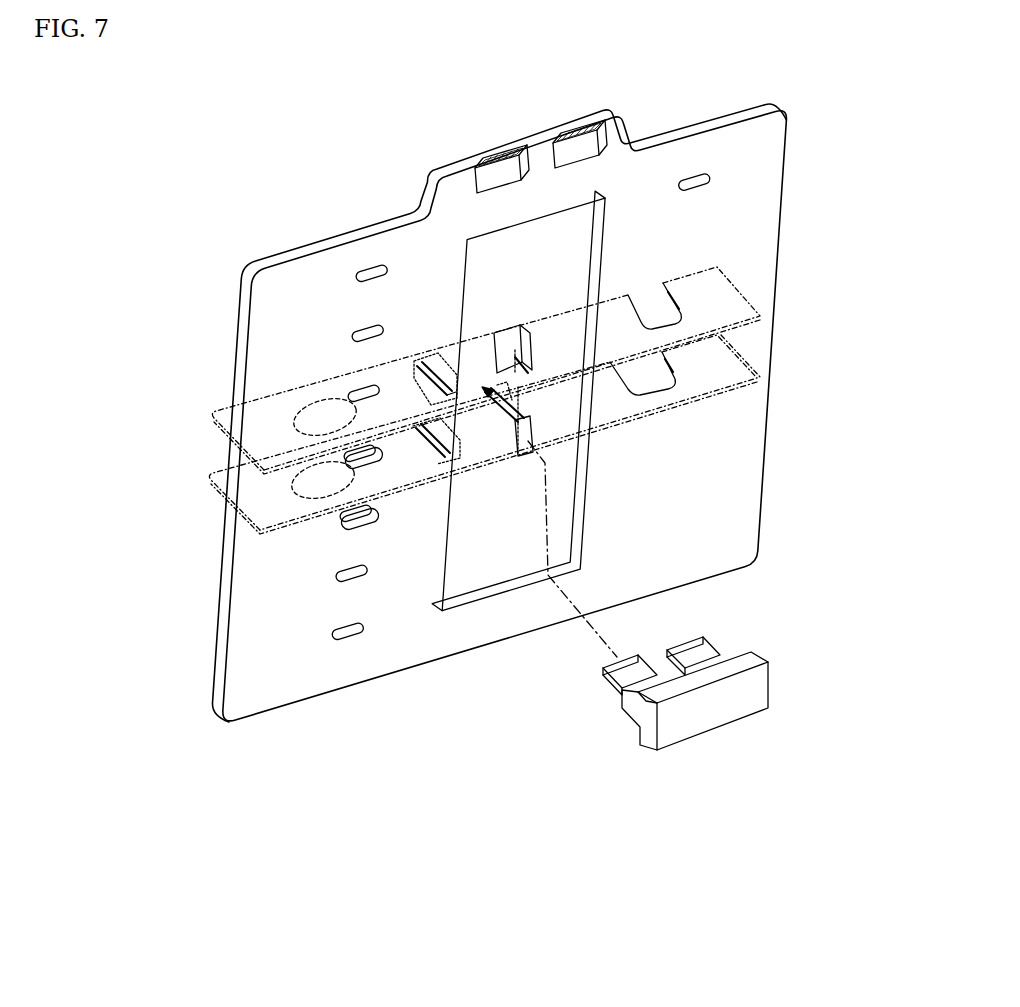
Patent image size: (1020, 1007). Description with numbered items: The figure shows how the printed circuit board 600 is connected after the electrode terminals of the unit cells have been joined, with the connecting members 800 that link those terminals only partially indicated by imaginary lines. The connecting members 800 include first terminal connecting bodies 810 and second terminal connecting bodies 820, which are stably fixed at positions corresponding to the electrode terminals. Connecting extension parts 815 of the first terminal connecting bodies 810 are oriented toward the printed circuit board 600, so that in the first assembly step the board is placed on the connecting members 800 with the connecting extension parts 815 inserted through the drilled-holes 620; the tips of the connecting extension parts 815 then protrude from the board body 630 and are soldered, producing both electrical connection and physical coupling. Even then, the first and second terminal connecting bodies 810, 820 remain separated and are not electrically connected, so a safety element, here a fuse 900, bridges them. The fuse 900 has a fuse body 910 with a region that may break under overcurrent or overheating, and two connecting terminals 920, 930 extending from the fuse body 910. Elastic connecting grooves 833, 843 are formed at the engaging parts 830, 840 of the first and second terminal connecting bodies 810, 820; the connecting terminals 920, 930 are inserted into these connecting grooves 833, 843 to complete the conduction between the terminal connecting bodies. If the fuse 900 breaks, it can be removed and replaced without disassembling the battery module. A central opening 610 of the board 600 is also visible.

The printed circuit board 600 is at (182, 599).
The opening of mounting plate 610 is at (477, 243).
The drilled-holes 620 is at (366, 265).
The board body 630 is at (322, 673).
The connecting members 800 is at (274, 367).
The first terminal connecting body 810 is at (235, 428).
The connecting extension parts 815 is at (355, 468).
The second terminal connecting body 820 is at (725, 300).
The engaging part 830 is at (450, 370).
The elastic connecting groove 833 is at (470, 395).
The engaging part 840 is at (495, 345).
The elastic connecting groove 843 is at (485, 392).
The fuse 900 is at (609, 755).
The fuse body 910 is at (760, 706).
The connecting terminal 920 is at (623, 670).
The connecting terminal 930 is at (712, 648).